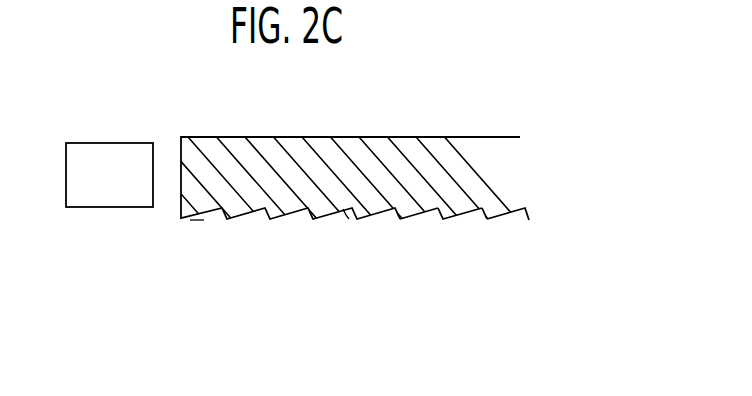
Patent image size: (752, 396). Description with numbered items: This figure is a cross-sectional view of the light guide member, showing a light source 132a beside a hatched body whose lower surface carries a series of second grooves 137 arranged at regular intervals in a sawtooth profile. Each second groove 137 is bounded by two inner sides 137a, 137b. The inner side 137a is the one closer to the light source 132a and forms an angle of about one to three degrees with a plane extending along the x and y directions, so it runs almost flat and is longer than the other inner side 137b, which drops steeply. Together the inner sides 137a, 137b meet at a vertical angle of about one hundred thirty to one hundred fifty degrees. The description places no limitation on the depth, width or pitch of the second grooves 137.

The light source 132a is at (100, 195).
The second grooves 137 is at (330, 226).
The inner side 137a is at (422, 218).
The inner side 137b is at (480, 220).